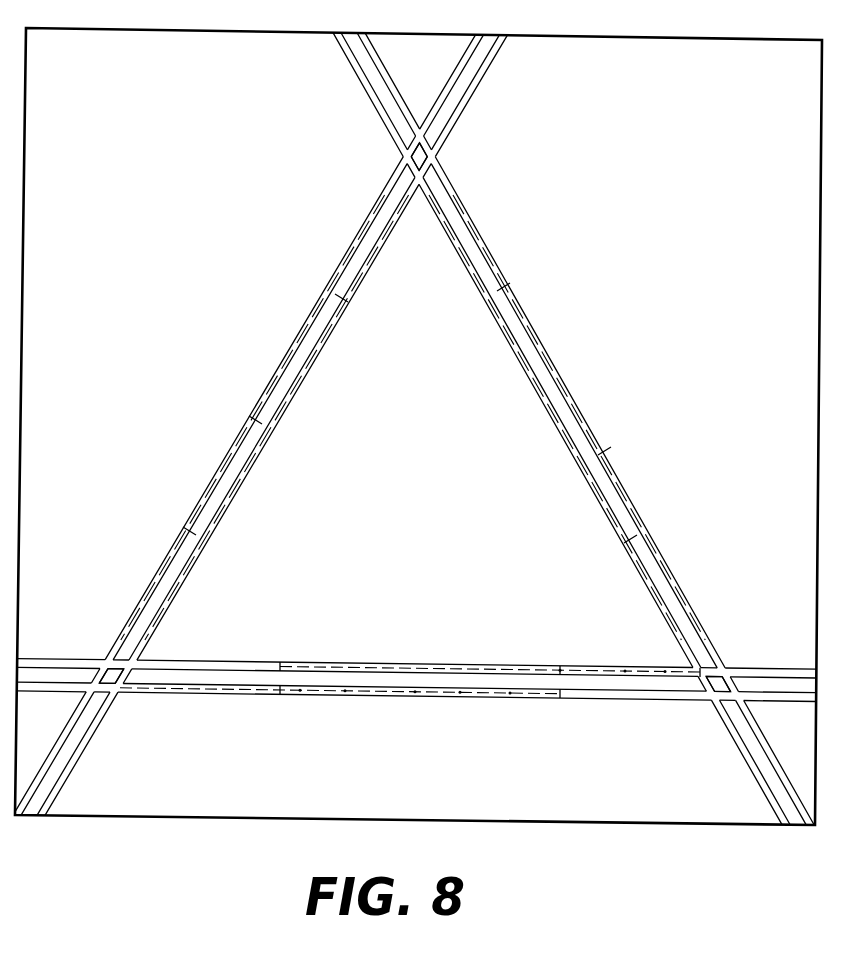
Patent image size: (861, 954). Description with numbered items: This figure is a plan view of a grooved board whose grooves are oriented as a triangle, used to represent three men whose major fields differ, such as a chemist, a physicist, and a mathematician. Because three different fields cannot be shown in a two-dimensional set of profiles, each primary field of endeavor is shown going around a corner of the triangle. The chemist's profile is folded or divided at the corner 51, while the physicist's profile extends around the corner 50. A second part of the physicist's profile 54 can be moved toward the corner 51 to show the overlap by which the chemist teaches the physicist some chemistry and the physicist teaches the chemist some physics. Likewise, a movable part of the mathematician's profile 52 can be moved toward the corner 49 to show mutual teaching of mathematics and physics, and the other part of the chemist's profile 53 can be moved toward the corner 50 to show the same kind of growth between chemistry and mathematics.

The corner 49 is at (727, 667).
The corner 50 is at (409, 157).
The corner 51 is at (118, 690).
The movable part of the mathematician's profile 52 is at (461, 256).
The other part of the chemist's profile 53 is at (250, 425).
The second part of the physicist's profile 54 is at (506, 689).